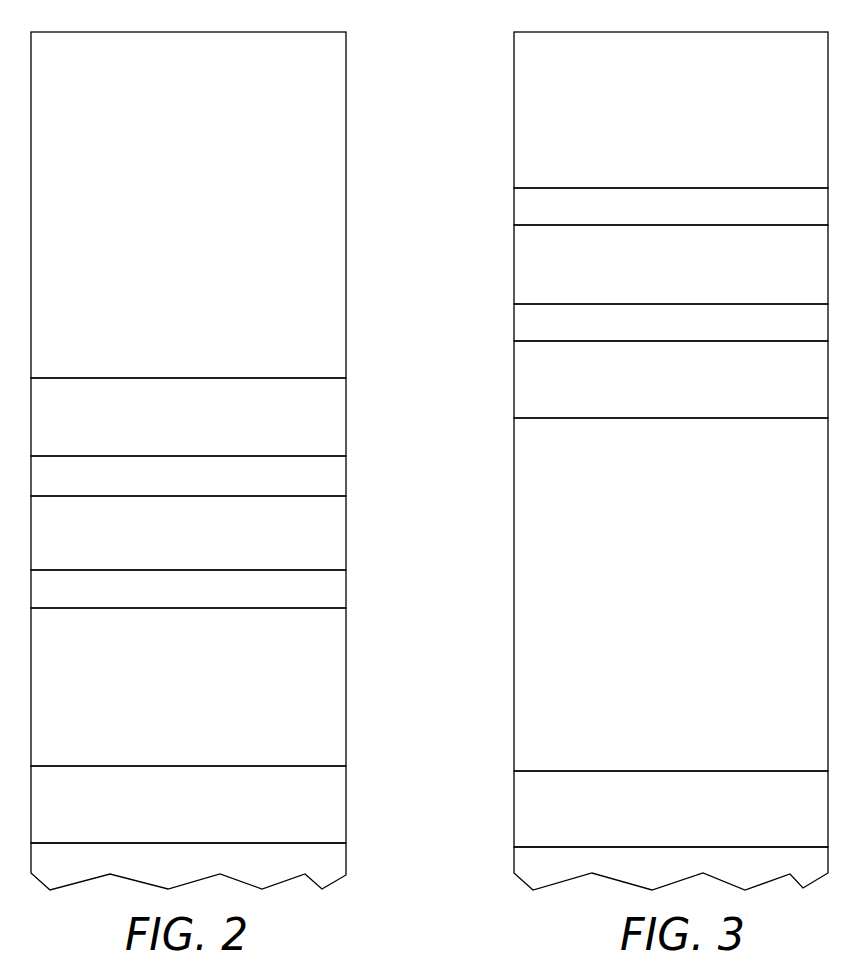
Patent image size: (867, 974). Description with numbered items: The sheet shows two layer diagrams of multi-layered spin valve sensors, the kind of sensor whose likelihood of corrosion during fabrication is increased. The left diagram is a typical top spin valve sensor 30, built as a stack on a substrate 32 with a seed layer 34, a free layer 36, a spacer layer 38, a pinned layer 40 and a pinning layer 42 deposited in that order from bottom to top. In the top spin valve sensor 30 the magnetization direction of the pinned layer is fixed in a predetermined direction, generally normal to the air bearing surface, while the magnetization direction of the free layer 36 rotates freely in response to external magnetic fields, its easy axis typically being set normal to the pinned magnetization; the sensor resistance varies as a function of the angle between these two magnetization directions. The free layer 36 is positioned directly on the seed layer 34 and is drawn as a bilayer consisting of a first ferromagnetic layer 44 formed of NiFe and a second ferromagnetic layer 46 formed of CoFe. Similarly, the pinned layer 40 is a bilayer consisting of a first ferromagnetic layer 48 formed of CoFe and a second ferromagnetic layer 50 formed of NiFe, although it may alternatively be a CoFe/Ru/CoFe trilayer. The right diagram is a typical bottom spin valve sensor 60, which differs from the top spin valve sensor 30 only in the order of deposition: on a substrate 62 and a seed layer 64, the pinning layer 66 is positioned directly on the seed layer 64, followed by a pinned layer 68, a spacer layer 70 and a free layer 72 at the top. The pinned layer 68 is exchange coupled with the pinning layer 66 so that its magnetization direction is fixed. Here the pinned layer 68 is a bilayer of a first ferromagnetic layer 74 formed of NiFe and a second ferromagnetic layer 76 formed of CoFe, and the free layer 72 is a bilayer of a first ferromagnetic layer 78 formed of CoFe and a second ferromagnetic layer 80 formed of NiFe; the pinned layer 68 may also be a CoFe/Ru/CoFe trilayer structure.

In FIG. 2, the top spin valve sensor 30 is at (365, 90).
In FIG. 2, the substrate 32 is at (338, 872).
In FIG. 2, the seed layer 34 is at (338, 816).
In FIG. 2, the free layer 36 is at (239, 668).
In FIG. 2, the spacer layer 38 is at (330, 537).
In FIG. 2, the pinned layer 40 is at (241, 437).
In FIG. 2, the pinning layer 42 is at (330, 71).
In FIG. 2, the first ferromagnetic layer 44 is at (330, 647).
In FIG. 2, the second ferromagnetic layer 46 is at (330, 605).
In FIG. 2, the first ferromagnetic layer 48 is at (330, 491).
In FIG. 2, the second ferromagnetic layer 50 is at (333, 417).
In FIG. 3, the bottom spin valve sensor 60 is at (495, 721).
In FIG. 3, the substrate 62 is at (823, 877).
In FIG. 3, the seed layer 64 is at (823, 817).
In FIG. 3, the pinning layer 66 is at (823, 465).
In FIG. 3, the pinned layer 68 is at (617, 361).
In FIG. 3, the spacer layer 70 is at (821, 261).
In FIG. 3, the free layer 72 is at (623, 128).
In FIG. 3, the first ferromagnetic layer 74 is at (823, 378).
In FIG. 3, the second ferromagnetic layer 76 is at (823, 337).
In FIG. 3, the first ferromagnetic layer 78 is at (821, 222).
In FIG. 3, the second ferromagnetic layer 80 is at (816, 69).